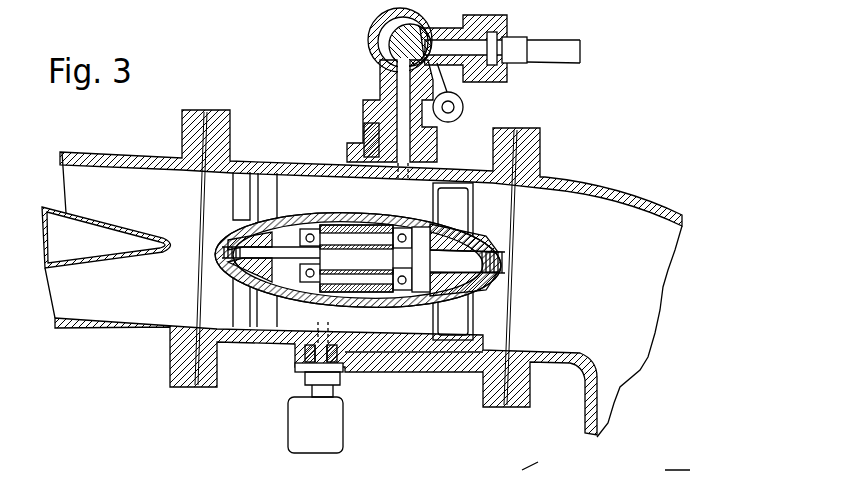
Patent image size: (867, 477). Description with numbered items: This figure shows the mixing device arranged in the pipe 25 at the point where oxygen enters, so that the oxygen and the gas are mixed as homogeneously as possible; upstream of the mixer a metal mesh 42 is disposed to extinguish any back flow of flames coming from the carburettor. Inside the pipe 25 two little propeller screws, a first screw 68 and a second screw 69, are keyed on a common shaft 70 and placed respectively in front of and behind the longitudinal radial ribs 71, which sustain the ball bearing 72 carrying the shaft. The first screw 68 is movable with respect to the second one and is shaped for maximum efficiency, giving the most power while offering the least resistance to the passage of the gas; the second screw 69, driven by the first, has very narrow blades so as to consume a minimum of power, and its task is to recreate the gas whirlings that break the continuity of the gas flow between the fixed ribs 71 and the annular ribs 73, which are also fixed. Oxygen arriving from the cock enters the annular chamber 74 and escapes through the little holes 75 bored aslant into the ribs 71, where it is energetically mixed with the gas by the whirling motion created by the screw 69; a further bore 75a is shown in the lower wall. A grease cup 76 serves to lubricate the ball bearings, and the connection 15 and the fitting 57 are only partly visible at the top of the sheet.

The pipe 15 is at (236, 4).
The pipe 25 is at (93, 153).
The metal mesh 42 is at (113, 270).
The ball joint fitting 57 is at (415, 24).
The first screw 68 is at (457, 328).
The second screw 69 is at (268, 190).
The common shaft 70 is at (323, 215).
The longitudinal radial ribs 71 is at (403, 323).
The ball bearing 72 is at (358, 255).
The annular ribs 73 is at (240, 288).
The annular chamber 74 is at (430, 158).
The little holes 75 is at (410, 178).
The lower threaded bore 75a is at (412, 342).
The grease cup 76 is at (310, 423).